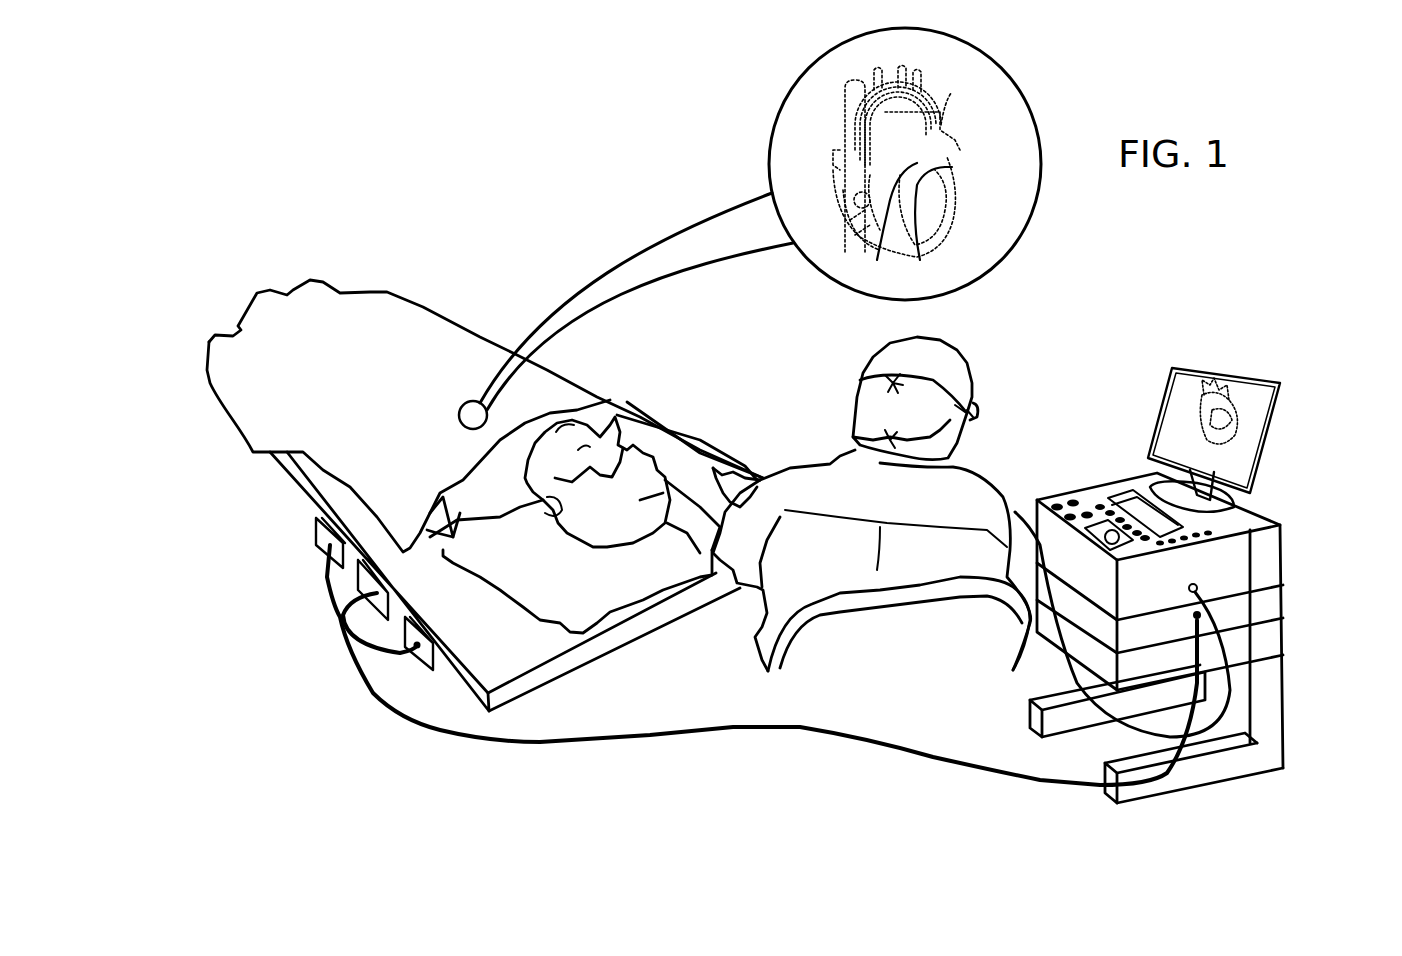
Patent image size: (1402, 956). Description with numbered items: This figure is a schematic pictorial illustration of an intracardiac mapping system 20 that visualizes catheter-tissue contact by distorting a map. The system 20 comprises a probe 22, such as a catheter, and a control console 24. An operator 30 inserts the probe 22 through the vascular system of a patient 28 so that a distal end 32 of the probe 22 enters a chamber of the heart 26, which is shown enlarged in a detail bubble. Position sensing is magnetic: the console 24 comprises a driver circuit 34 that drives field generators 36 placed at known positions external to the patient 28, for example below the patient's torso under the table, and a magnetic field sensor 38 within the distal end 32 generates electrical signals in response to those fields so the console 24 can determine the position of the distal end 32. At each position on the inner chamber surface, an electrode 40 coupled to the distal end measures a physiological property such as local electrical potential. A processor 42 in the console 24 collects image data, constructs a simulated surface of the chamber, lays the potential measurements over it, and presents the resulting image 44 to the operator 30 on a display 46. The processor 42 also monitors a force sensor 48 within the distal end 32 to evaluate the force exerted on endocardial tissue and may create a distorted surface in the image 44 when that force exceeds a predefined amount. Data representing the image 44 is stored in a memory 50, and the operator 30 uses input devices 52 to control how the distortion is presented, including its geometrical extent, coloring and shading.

The intracardiac mapping system 20 is at (1104, 304).
The probe 22 is at (680, 440).
The control console 24 is at (1296, 508).
The heart 26 is at (950, 214).
The patient 28 is at (590, 537).
The operator 30 is at (790, 463).
The distal end 32 is at (945, 97).
The driver circuit 34 is at (1250, 547).
The field generators 36 is at (417, 662).
The magnetic field sensor 38 is at (888, 225).
The electrode 40 is at (952, 167).
The processor 42 is at (1253, 608).
The image 44 is at (1185, 408).
The display 46 is at (1283, 398).
The force sensor 48 is at (927, 227).
The memory 50 is at (1253, 645).
The input devices 52 is at (1120, 488).